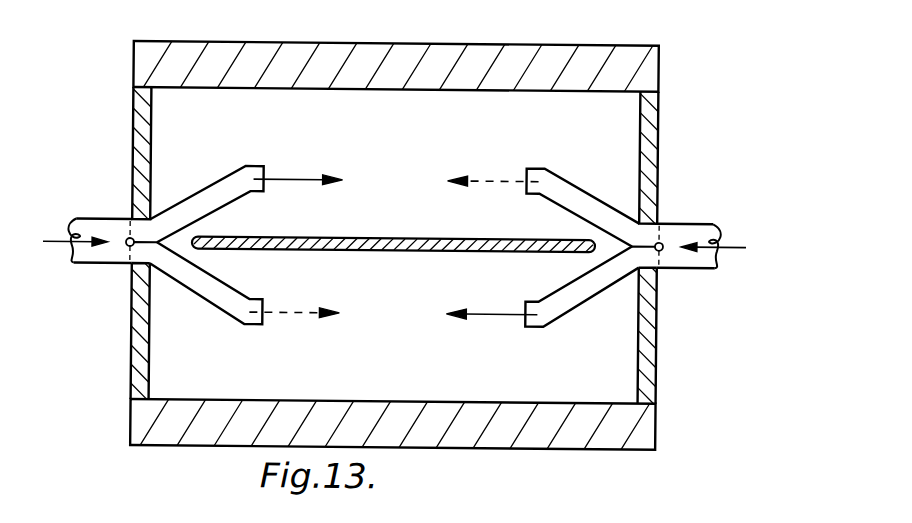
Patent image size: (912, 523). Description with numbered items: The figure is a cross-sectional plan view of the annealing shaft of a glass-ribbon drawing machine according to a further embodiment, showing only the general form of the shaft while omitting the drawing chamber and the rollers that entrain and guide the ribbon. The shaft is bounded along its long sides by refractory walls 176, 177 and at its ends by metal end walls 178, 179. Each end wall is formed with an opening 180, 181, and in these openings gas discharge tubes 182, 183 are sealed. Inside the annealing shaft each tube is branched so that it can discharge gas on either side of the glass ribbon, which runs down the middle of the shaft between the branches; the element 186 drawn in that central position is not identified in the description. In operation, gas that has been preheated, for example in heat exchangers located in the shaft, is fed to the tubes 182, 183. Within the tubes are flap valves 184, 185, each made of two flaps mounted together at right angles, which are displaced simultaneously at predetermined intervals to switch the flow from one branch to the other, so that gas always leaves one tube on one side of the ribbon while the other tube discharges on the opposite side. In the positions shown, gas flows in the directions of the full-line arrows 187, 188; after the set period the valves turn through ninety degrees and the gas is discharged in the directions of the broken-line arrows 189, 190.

The refractory wall 176 is at (480, 52).
The refractory wall 177 is at (578, 424).
The metal end wall 178 is at (143, 118).
The metal end wall 179 is at (653, 117).
The opening 180 is at (130, 265).
The opening 181 is at (663, 267).
The gas discharge tube 182 is at (113, 238).
The gas discharge tube 183 is at (672, 235).
The flap valve 184 is at (150, 267).
The flap valve 185 is at (640, 260).
The central plate 186 is at (383, 246).
The full-line arrow 187 is at (297, 173).
The full-line arrow 188 is at (487, 312).
The broken-line arrow 189 is at (297, 313).
The broken-line arrow 190 is at (488, 174).